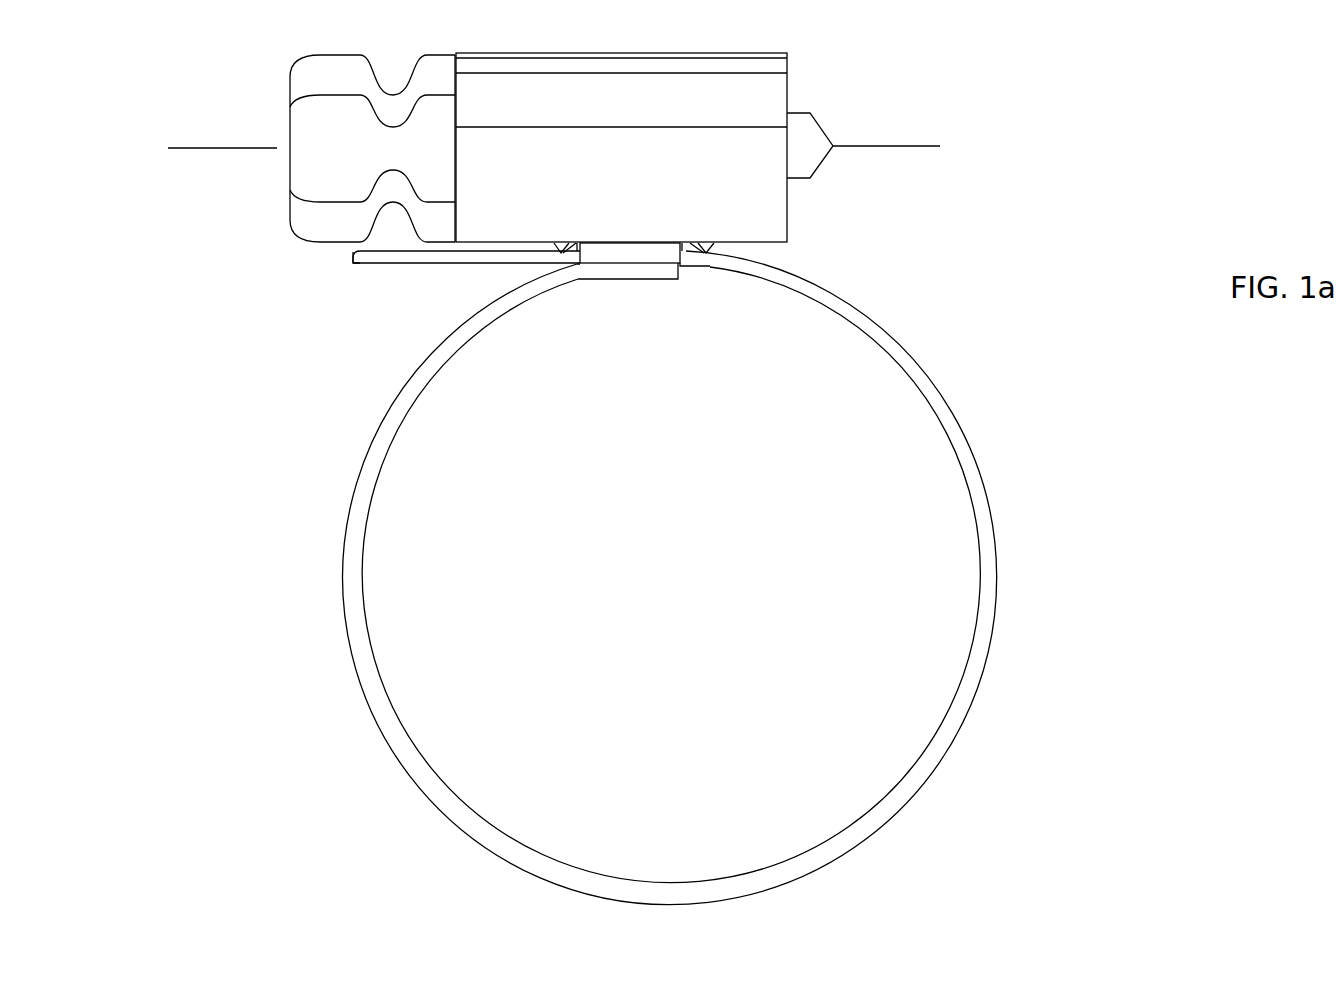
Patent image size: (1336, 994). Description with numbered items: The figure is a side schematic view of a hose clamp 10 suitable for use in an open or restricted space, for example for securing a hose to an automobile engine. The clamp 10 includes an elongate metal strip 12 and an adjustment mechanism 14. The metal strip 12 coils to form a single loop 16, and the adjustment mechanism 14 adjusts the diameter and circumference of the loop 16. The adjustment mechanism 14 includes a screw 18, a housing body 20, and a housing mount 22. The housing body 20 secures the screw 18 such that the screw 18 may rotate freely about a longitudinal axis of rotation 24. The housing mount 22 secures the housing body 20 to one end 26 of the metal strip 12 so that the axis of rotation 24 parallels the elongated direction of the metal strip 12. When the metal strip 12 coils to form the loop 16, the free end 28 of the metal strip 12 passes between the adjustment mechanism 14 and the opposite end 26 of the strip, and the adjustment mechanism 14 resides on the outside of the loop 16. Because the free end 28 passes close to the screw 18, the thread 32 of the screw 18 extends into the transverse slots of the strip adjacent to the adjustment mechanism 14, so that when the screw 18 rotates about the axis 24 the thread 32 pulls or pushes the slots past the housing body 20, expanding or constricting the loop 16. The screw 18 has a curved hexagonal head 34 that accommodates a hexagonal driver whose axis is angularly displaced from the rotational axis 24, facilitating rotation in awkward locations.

The clamp 10 is at (1035, 575).
The elongate metal strip 12 is at (411, 259).
The adjustment mechanism 14 is at (785, 88).
The loop 16 is at (952, 743).
The screw 18 is at (340, 155).
The housing body 20 is at (607, 160).
The housing mount 22 is at (615, 255).
The longitudinal axis of rotation 24 is at (200, 150).
The end of metal strip 26 is at (643, 273).
The free end of metal strip 28 is at (358, 262).
The thread 32 is at (565, 253).
The curved hexagonal head 34 is at (305, 77).